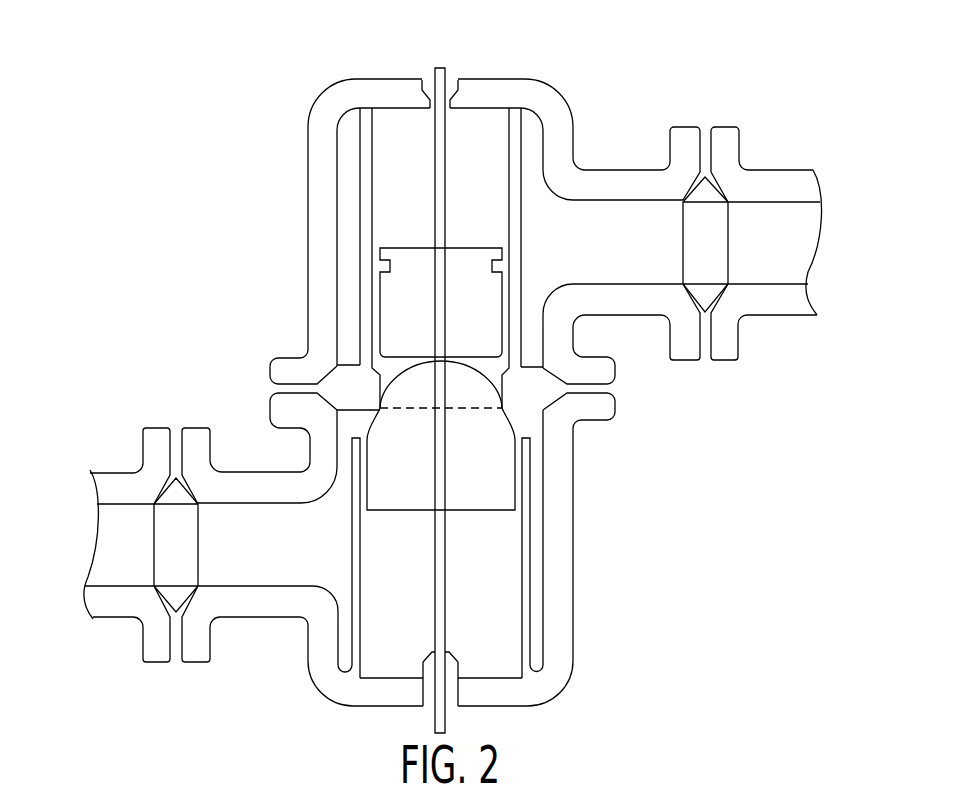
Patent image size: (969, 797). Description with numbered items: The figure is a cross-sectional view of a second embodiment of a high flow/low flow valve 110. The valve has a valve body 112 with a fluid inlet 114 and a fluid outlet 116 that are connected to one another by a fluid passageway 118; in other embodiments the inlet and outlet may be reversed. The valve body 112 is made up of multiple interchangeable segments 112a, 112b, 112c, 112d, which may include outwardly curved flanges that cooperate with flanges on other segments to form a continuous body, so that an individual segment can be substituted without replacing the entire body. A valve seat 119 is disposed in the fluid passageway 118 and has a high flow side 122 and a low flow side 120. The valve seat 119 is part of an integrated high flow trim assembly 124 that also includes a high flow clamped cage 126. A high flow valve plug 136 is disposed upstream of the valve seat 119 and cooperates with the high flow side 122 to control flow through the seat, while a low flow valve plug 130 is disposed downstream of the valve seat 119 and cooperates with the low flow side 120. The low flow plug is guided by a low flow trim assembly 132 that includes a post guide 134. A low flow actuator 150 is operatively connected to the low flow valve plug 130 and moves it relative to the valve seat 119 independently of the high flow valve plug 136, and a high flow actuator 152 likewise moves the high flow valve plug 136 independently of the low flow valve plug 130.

The high flow/low flow valve 110 is at (176, 129).
The valve body 112 is at (581, 73).
The interchangeable segment 112a is at (718, 333).
The interchangeable segment 112b is at (331, 102).
The interchangeable segment 112c is at (558, 667).
The interchangeable segment 112d is at (158, 443).
The fluid inlet 114 is at (797, 240).
The fluid outlet 116 is at (103, 547).
The fluid passageway 118 is at (273, 561).
The valve seat 119 is at (538, 393).
The low flow side 120 is at (476, 418).
The high flow side 122 is at (470, 328).
The high flow trim assembly 124 is at (332, 213).
The high flow clamped cage 126 is at (367, 180).
The low flow valve plug 130 is at (470, 447).
The low flow trim assembly 132 is at (551, 568).
The post guide 134 is at (528, 508).
The high flow valve plug 136 is at (397, 300).
The low flow actuator 150 is at (440, 680).
The high flow actuator 152 is at (445, 75).